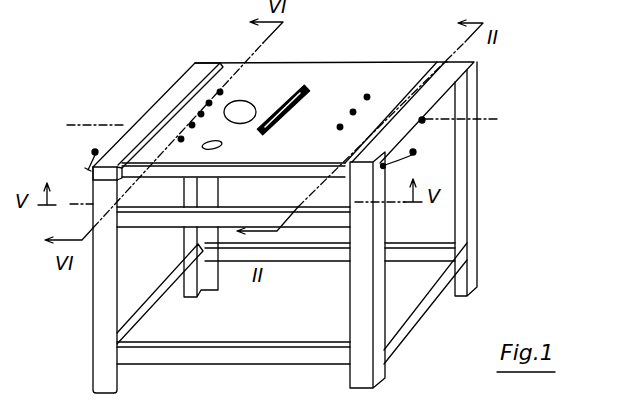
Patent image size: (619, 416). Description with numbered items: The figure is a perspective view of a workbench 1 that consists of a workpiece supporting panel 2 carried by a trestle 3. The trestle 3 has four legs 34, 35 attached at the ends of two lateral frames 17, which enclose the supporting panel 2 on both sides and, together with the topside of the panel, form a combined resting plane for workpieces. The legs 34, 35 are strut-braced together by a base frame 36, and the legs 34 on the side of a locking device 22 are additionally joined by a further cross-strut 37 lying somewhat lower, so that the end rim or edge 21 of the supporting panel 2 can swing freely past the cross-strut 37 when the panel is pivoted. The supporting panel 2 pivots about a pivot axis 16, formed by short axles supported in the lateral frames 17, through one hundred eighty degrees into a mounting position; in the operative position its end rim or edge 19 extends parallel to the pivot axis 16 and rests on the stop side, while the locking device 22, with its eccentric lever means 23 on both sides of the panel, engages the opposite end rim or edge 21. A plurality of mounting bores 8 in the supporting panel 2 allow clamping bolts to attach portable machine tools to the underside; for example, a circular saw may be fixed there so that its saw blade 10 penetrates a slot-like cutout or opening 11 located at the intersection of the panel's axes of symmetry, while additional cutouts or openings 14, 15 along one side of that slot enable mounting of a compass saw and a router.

The workbench 1 is at (138, 58).
The workpiece supporting panel 2 is at (360, 66).
The trestle 3 is at (482, 158).
The mounting bores 8 is at (223, 91).
The saw blade 10 is at (266, 116).
The slot-like cutout or opening 11 is at (293, 114).
The cutout or opening 14 is at (205, 147).
The cutout or opening 15 is at (238, 102).
The pivot axis 16 is at (493, 111).
The lateral frames 17 is at (183, 92).
The end rim or edge 19 is at (380, 70).
The end rim or edge 21 is at (243, 170).
The locking device 22 is at (61, 165).
The eccentric lever means 23 is at (90, 169).
The legs 34 is at (107, 323).
The legs 35 is at (478, 209).
The base frame 36 is at (415, 310).
The cross-strut 37 is at (208, 222).